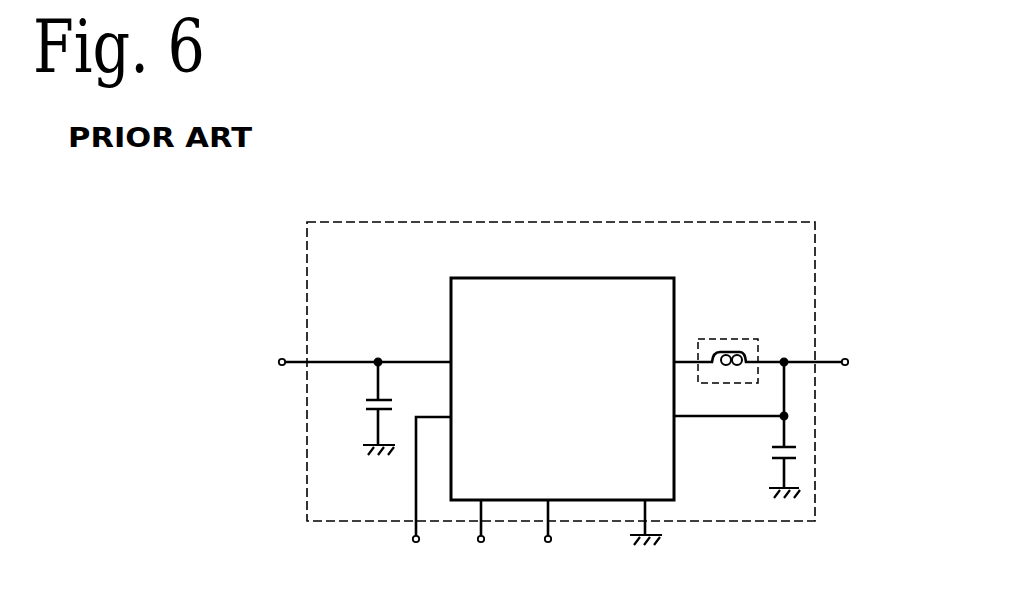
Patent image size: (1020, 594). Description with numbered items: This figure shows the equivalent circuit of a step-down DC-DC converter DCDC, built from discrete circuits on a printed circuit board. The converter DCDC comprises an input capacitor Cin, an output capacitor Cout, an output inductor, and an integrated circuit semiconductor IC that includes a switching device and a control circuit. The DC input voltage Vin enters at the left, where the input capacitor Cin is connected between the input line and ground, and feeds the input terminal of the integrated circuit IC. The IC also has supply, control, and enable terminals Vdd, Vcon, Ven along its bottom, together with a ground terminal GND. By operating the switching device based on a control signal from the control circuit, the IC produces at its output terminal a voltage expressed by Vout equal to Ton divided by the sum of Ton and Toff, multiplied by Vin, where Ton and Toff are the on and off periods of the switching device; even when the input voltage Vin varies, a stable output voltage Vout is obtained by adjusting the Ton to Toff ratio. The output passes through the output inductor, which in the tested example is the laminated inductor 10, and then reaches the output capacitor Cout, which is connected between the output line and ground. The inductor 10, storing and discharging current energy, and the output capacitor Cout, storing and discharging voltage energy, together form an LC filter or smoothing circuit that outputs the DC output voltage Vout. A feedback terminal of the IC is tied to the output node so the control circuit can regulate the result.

The laminated inductor 10 is at (734, 339).
The step-down DC-DC converter DCDC is at (612, 222).
The integrated circuit semiconductor IC is at (537, 280).
The DC input voltage Vin is at (338, 362).
The input capacitor Cin is at (357, 408).
The supply voltage terminal Vdd is at (423, 496).
The control voltage terminal Vcon is at (480, 538).
The enable terminal Ven is at (546, 538).
The ground terminal GND is at (646, 522).
The output voltage Vout is at (844, 362).
The output capacitor Cout is at (737, 430).